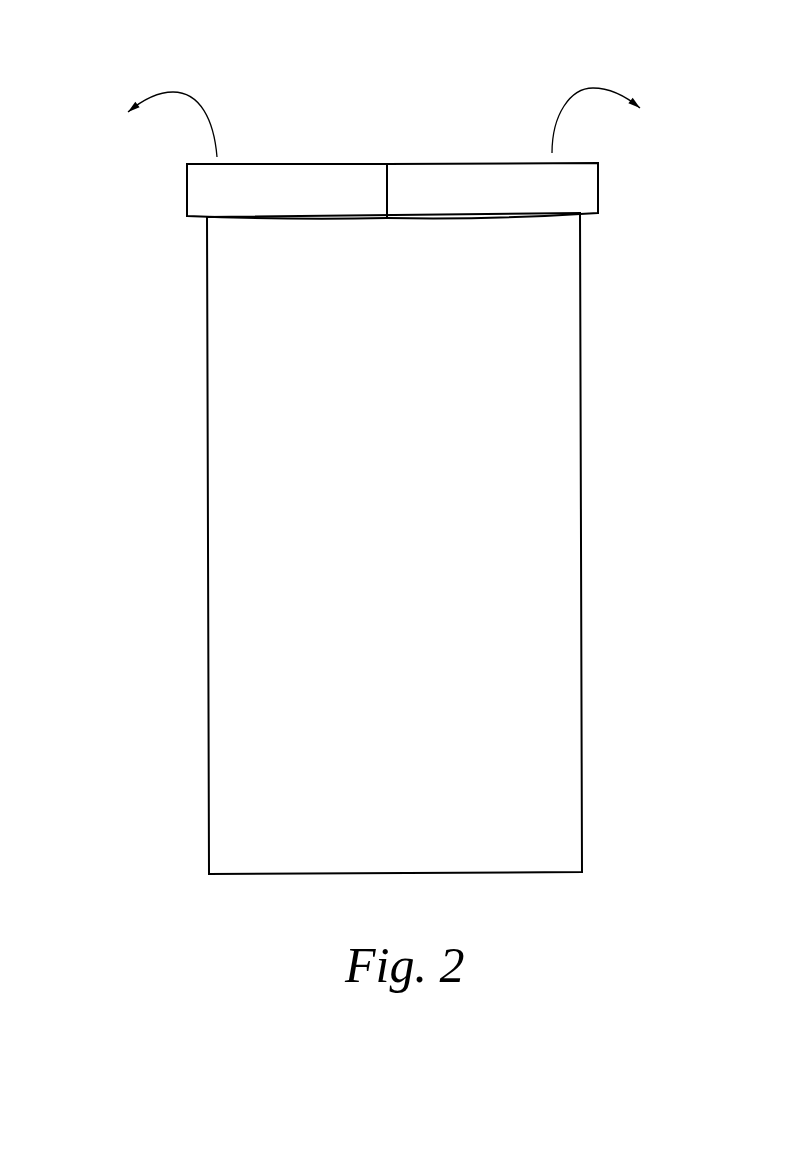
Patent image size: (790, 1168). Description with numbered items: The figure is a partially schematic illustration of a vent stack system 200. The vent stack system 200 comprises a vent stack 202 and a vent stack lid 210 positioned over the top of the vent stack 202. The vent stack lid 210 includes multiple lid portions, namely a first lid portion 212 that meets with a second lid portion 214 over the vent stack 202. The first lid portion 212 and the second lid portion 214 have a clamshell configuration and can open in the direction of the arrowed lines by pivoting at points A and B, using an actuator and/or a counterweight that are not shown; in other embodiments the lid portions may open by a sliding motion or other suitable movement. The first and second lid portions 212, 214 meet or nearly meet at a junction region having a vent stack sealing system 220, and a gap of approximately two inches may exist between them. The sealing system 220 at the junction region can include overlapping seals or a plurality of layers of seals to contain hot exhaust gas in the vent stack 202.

The vent stack system 200 is at (133, 73).
The vent stack 202 is at (555, 343).
The vent stack lid 210 is at (343, 152).
The first lid portion 212 is at (197, 190).
The second lid portion 214 is at (568, 192).
The vent stack sealing system 220 is at (390, 152).
The pivot point A is at (205, 218).
The pivot point B is at (580, 215).